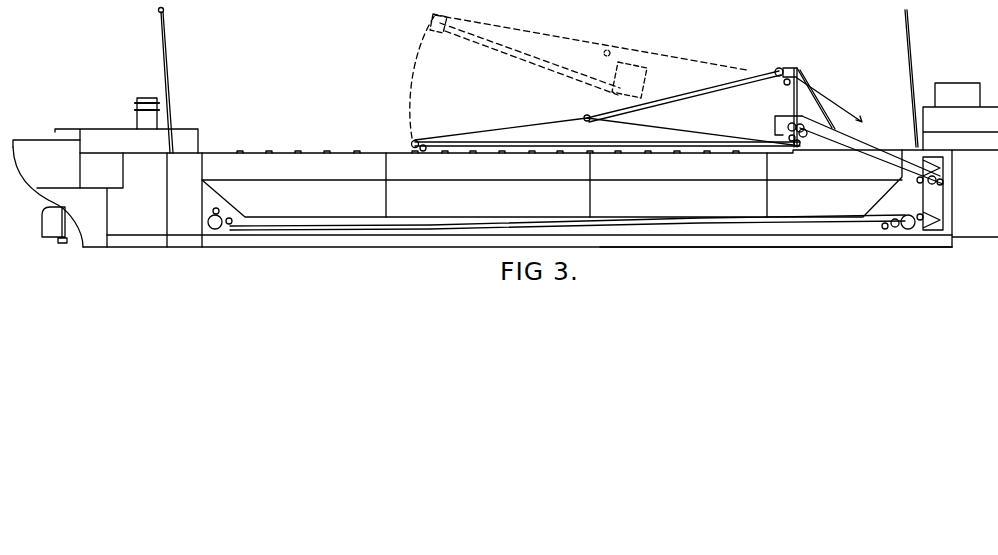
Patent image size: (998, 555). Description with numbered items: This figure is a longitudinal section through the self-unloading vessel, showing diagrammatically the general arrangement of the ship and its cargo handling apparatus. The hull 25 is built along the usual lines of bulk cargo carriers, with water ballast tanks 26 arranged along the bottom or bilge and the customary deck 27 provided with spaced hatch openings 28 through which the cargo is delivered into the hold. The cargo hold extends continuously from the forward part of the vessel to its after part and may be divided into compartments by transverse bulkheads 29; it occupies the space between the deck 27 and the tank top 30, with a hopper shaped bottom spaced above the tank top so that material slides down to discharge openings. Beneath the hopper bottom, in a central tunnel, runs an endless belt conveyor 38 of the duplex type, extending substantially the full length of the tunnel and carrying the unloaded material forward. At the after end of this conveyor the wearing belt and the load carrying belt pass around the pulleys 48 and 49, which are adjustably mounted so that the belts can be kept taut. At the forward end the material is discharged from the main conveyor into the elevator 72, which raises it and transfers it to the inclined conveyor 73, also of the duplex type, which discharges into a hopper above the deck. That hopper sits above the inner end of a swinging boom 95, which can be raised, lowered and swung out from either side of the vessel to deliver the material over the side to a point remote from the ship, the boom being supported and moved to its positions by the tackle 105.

The hull 25 is at (330, 246).
The water ballast tanks 26 is at (722, 240).
The deck 27 is at (312, 152).
The hatch openings 28 is at (343, 153).
The transverse bulkheads 29 is at (388, 196).
The tank top 30 is at (446, 237).
The endless belt conveyor 38 is at (490, 225).
The pulley 48 is at (218, 229).
The pulley 49 is at (214, 209).
The elevator 72 is at (947, 160).
The inclined conveyor 73 is at (880, 158).
The swinging boom 95 is at (493, 140).
The tackle 105 is at (719, 95).